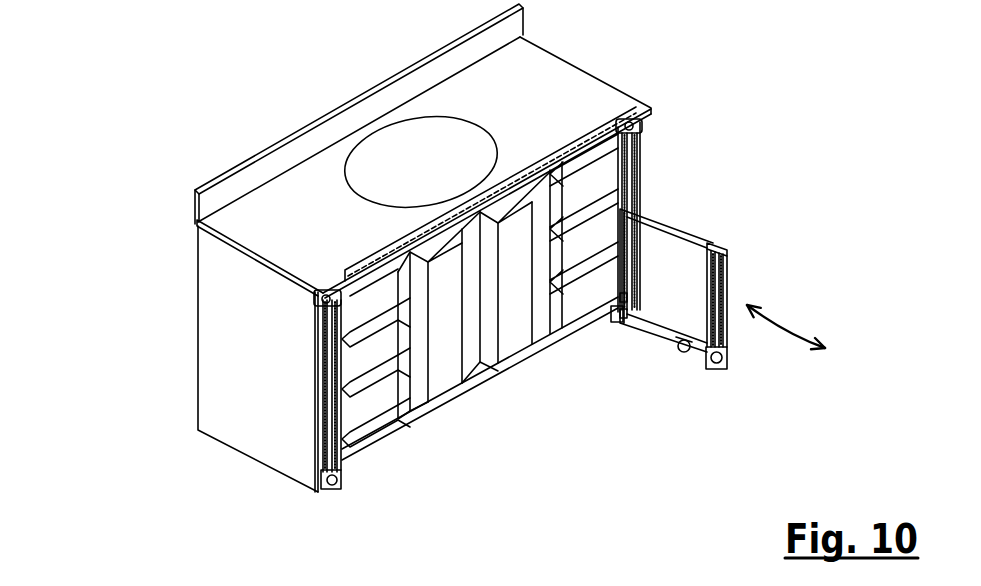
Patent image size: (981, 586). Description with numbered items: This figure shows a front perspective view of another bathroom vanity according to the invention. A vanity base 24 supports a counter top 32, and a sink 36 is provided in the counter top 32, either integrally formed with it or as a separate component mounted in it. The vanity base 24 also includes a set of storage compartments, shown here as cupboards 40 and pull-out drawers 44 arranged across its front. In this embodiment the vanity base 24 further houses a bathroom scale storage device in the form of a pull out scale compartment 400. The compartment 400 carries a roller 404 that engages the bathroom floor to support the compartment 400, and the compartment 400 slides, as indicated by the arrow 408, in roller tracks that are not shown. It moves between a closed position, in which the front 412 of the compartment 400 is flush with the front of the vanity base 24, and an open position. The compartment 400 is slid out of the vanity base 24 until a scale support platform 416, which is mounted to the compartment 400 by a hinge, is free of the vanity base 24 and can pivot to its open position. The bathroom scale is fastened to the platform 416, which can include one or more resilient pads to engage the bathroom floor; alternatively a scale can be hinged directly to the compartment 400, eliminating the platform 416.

The vanity base 24 is at (177, 233).
The counter top 32 is at (297, 217).
The sink 36 is at (412, 165).
The cupboards 40 is at (527, 322).
The pull-out drawers 44 is at (372, 408).
The pull out scale compartment 400 is at (737, 283).
The roller 404 is at (680, 350).
The arrow 408 is at (788, 320).
The front 412 is at (722, 265).
The scale support platform 416 is at (690, 292).